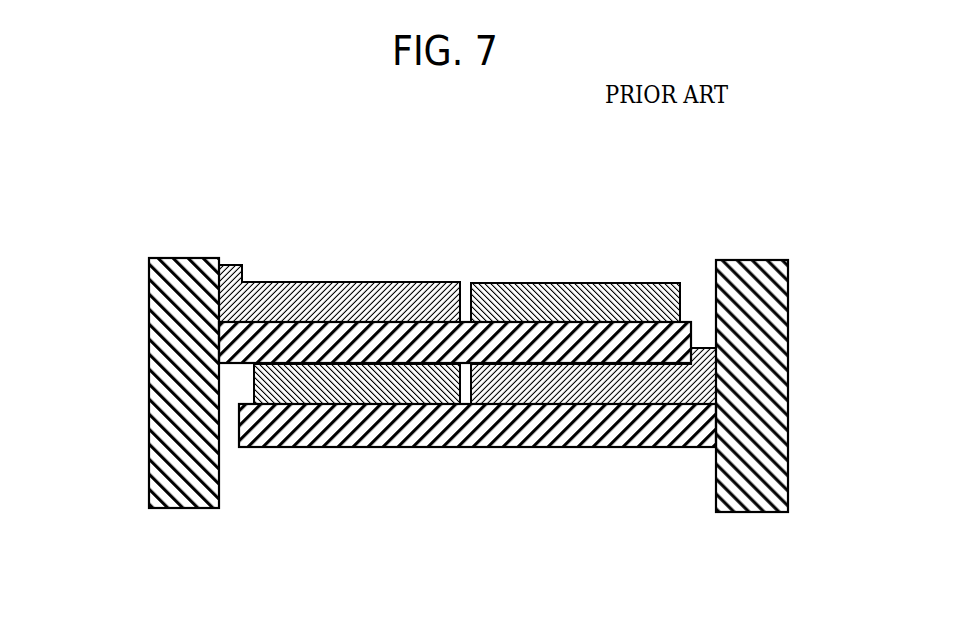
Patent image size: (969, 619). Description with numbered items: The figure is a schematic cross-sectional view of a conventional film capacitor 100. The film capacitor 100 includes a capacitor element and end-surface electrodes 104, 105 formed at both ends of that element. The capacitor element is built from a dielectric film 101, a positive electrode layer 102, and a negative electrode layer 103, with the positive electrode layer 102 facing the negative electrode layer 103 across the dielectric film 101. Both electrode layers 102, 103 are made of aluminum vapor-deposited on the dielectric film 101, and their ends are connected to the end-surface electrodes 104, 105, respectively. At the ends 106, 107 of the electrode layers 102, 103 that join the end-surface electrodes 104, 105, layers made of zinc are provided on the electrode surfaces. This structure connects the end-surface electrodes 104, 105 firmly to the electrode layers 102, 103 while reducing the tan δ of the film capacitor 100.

The film capacitor 100 is at (672, 240).
The dielectric film 101 is at (465, 323).
The positive electrode layer 102 is at (440, 259).
The negative electrode layer 103 is at (485, 451).
The end-surface electrode 104 is at (162, 373).
The end-surface electrode 105 is at (765, 388).
The end of electrode layer 106 is at (227, 270).
The end of electrode layer 107 is at (700, 368).